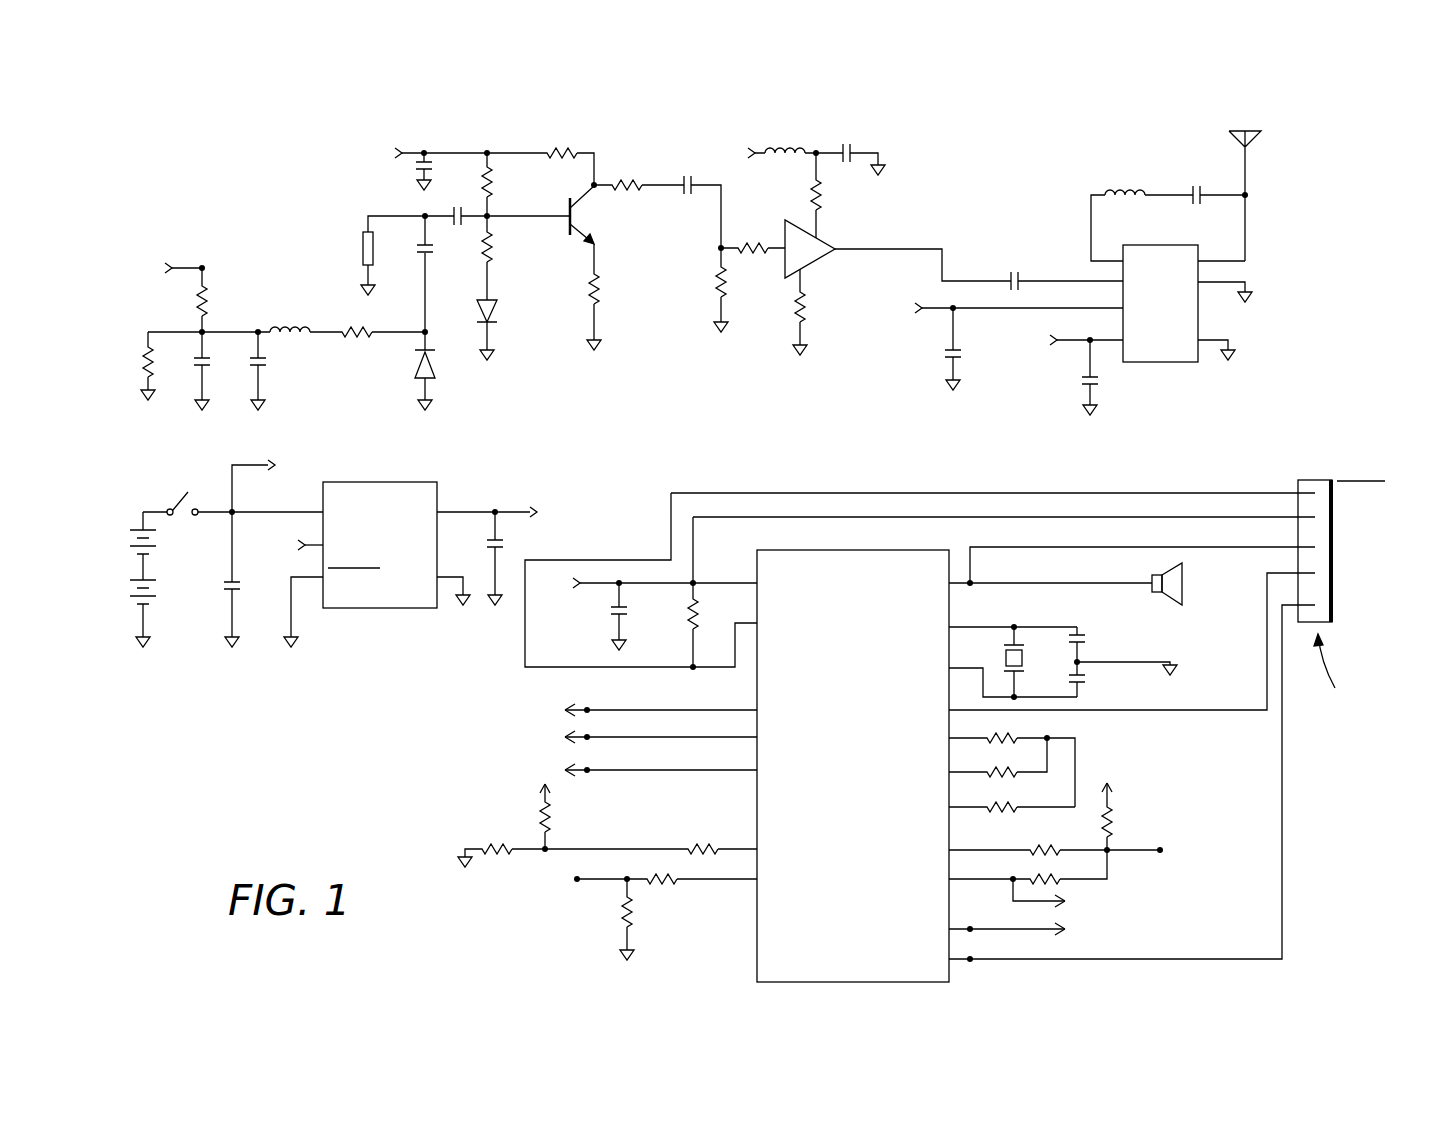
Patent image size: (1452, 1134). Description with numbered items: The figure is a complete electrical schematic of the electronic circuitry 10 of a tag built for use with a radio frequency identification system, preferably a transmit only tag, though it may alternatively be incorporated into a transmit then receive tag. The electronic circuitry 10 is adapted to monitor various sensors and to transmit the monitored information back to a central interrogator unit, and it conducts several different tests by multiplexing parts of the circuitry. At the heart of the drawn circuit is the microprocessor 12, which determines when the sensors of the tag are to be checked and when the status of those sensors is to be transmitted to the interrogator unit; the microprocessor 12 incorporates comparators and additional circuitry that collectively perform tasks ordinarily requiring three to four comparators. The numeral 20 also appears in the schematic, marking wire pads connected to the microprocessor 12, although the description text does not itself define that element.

The electronic circuitry 10 is at (350, 735).
The microprocessor 12 is at (745, 937).
The wire pads WR1/WR2 20 is at (520, 880).